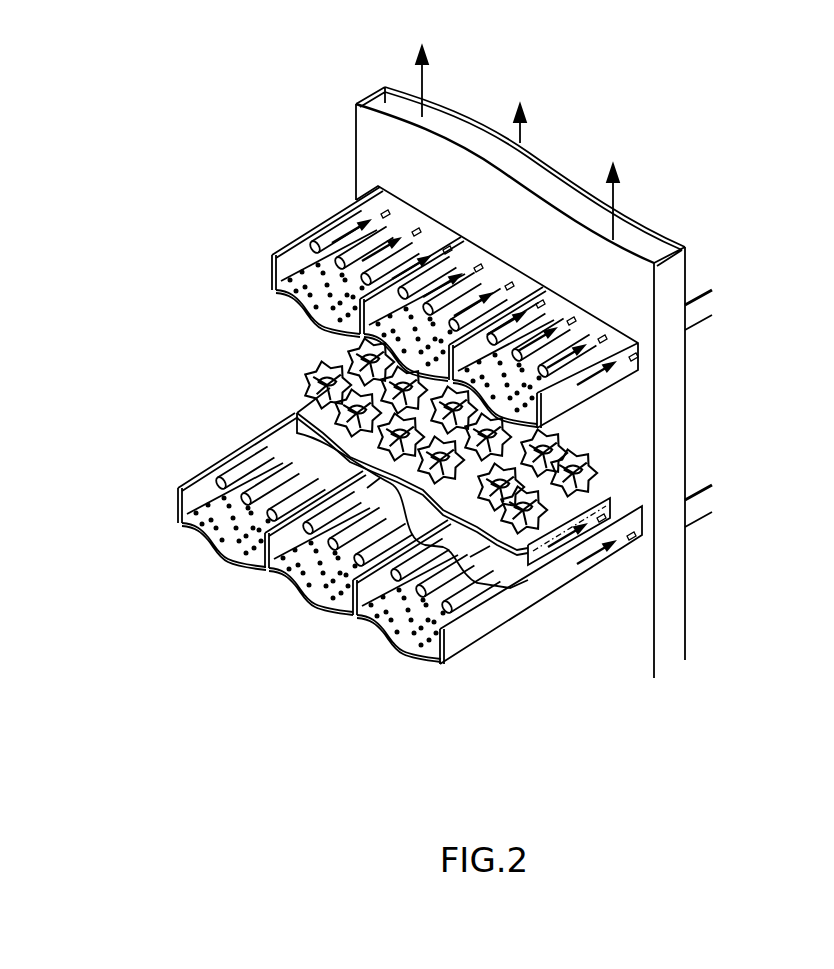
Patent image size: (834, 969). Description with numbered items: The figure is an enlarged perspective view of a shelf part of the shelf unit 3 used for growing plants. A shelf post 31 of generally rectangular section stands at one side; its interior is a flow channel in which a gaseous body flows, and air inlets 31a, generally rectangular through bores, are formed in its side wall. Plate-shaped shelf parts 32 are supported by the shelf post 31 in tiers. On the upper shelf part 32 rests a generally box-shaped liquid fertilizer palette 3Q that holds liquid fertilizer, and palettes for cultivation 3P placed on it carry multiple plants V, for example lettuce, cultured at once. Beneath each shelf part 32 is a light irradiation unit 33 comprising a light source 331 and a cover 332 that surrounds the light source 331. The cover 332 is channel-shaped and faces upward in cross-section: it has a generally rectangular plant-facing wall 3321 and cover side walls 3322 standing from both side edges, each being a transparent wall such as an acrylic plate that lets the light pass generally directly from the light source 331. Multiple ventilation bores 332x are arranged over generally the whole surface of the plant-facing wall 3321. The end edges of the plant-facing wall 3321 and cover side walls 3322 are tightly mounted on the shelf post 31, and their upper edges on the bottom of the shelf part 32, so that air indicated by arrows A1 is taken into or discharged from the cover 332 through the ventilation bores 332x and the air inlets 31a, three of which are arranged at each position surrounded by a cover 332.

The shelf unit 3 is at (128, 200).
The shelf post 31 is at (673, 593).
The air inlet 31a is at (370, 210).
The shelf part 32 is at (356, 200).
The light irradiation unit 33 is at (262, 212).
The light source 331 is at (313, 238).
The cover 332 is at (436, 462).
The ventilation bores 332x is at (310, 297).
The plant-facing wall 3321 is at (313, 320).
The cover side wall 3322 is at (275, 255).
The palette for cultivation 3P is at (297, 410).
The liquid fertilizer palette 3Q is at (295, 413).
The plants V is at (322, 366).
The air flow direction A1 is at (607, 595).